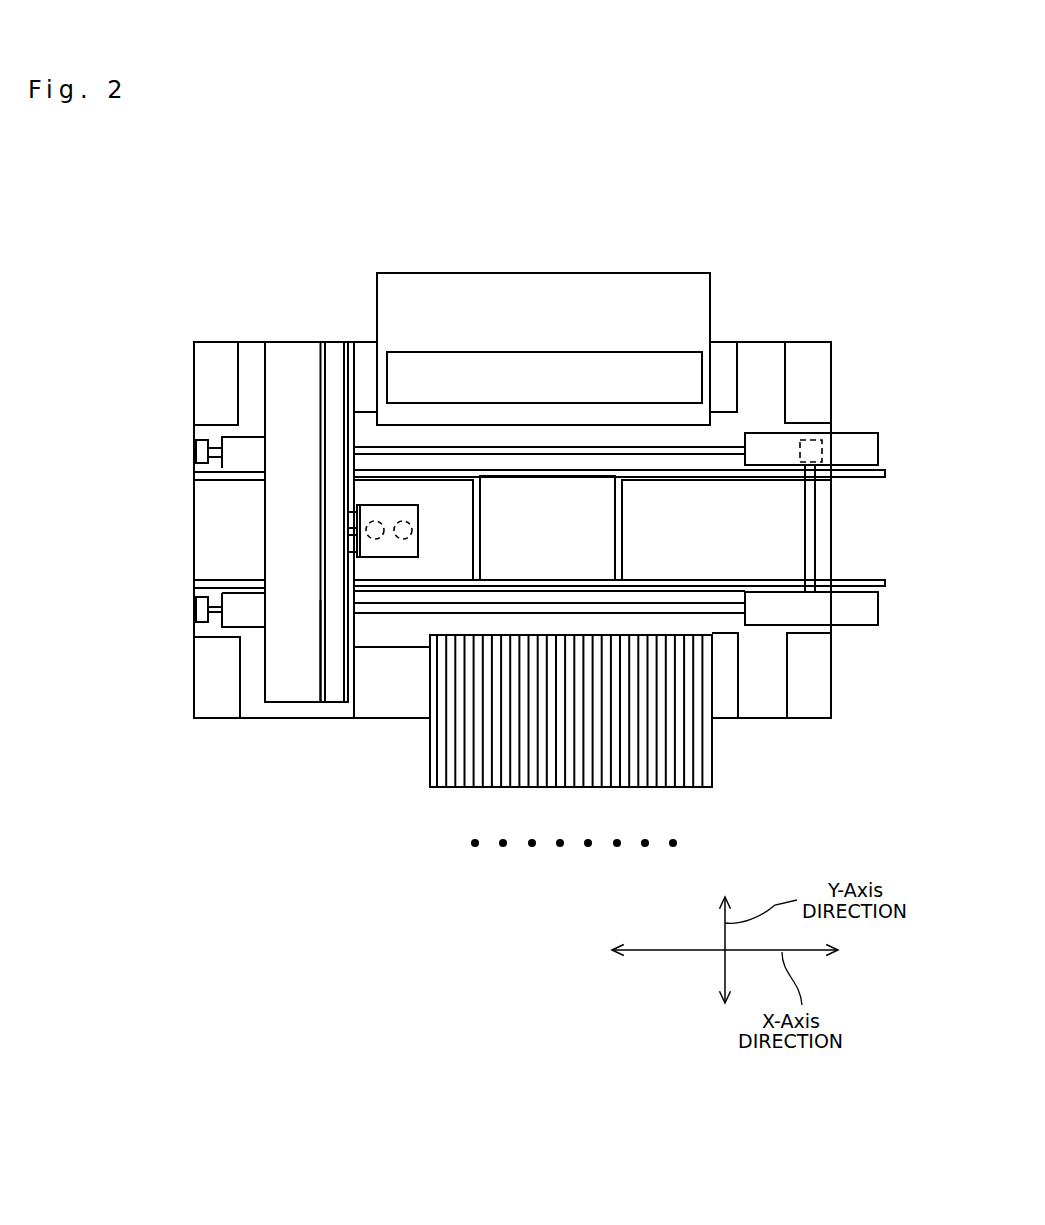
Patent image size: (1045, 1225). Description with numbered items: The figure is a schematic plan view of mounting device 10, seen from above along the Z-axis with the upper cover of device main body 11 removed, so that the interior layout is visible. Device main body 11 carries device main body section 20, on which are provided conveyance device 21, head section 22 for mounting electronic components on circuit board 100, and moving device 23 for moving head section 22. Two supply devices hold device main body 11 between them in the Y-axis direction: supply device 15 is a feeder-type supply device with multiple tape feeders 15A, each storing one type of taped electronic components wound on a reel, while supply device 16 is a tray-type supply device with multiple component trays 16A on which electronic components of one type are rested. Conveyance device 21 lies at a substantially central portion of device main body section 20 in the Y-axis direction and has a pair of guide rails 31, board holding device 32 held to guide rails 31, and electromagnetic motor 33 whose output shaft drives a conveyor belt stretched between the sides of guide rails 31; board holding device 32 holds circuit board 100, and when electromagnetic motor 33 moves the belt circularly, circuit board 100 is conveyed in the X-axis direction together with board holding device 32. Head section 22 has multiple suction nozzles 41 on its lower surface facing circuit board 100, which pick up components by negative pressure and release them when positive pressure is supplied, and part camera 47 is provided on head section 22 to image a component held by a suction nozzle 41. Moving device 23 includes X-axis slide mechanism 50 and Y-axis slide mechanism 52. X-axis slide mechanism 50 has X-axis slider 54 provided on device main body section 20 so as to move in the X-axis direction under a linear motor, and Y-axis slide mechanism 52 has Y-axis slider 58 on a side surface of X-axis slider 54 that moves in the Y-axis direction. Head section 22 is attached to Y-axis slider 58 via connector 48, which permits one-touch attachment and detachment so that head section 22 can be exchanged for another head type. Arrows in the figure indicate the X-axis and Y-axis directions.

The mounting device 10 is at (737, 170).
The device main body 11 is at (817, 341).
The supply device 15 is at (734, 760).
The tape feeders 15A is at (433, 788).
The supply device 16 is at (558, 253).
The component trays 16A is at (640, 358).
The device main body section 20 is at (758, 363).
The conveyance device 21 is at (857, 529).
The head section 22 is at (398, 505).
The moving device 23 is at (288, 312).
The guide rails 31 is at (886, 474).
The board holding device 32 is at (622, 520).
The electromagnetic motor 33 is at (803, 438).
The suction nozzles 41 is at (403, 552).
The part camera 47 is at (380, 518).
The connector 48 is at (359, 505).
The X-axis slide mechanism 50 is at (258, 523).
The Y-axis slide mechanism 52 is at (338, 533).
The X-axis slider 54 is at (295, 688).
The Y-axis slider 58 is at (350, 512).
The circuit board 100 is at (612, 548).